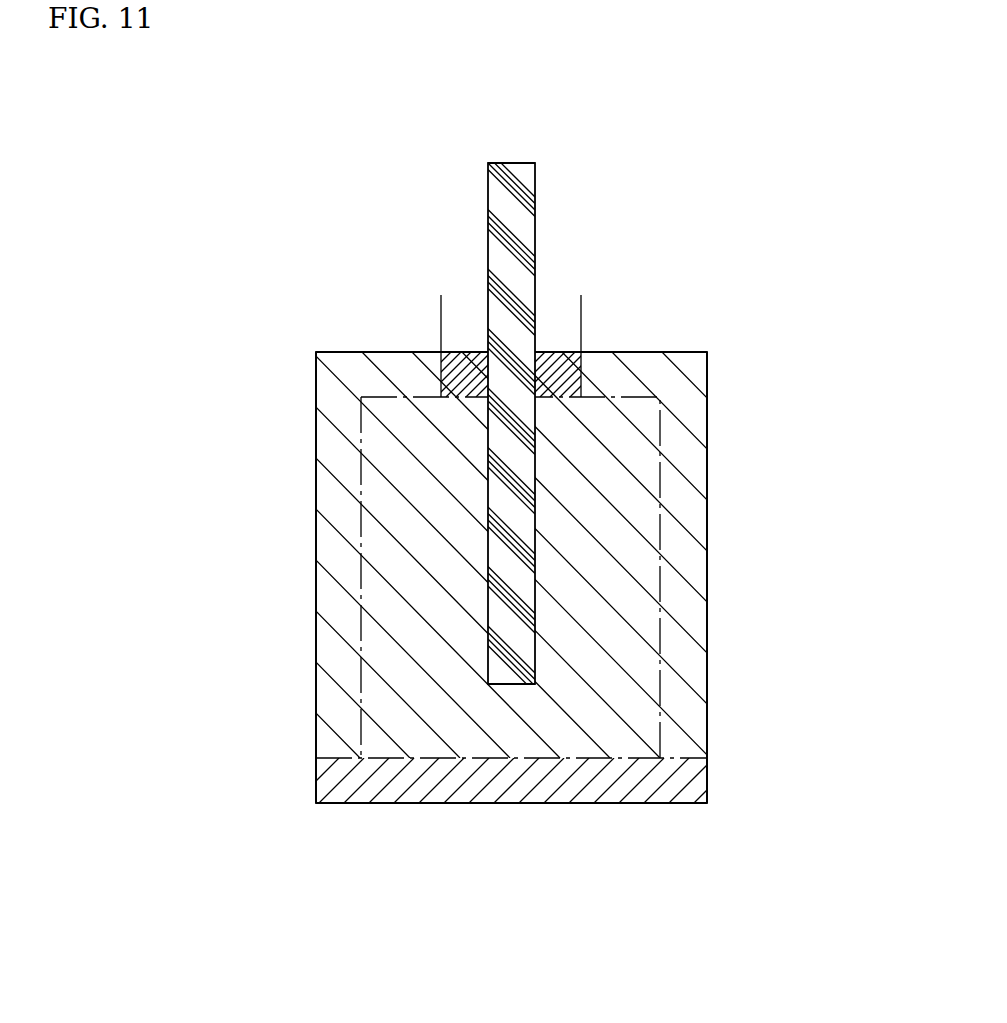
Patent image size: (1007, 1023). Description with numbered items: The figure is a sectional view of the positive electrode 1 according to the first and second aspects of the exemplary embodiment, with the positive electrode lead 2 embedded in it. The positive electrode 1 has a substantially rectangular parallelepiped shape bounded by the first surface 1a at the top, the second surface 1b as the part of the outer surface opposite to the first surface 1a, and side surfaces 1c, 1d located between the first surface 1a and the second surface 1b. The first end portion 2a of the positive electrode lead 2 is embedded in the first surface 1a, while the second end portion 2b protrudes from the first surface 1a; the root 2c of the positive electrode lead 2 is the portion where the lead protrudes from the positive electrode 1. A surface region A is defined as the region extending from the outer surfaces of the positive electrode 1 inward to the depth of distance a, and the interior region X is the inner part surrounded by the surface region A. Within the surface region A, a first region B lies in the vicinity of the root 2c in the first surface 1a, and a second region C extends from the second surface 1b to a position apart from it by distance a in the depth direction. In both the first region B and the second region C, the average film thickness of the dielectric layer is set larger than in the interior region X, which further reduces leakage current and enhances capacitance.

The positive electrode 1 is at (708, 347).
The first surface 1a is at (345, 352).
The second surface 1b is at (517, 805).
The side surface 1c is at (707, 536).
The side surface 1d is at (316, 558).
The positive electrode lead 2 is at (522, 157).
The first end portion 2a is at (513, 633).
The second end portion 2b is at (528, 172).
The root 2c is at (510, 347).
The surface region A is at (683, 438).
The first region B is at (568, 377).
The second region C is at (439, 785).
The interior region X is at (391, 737).
The distance a is at (398, 433).